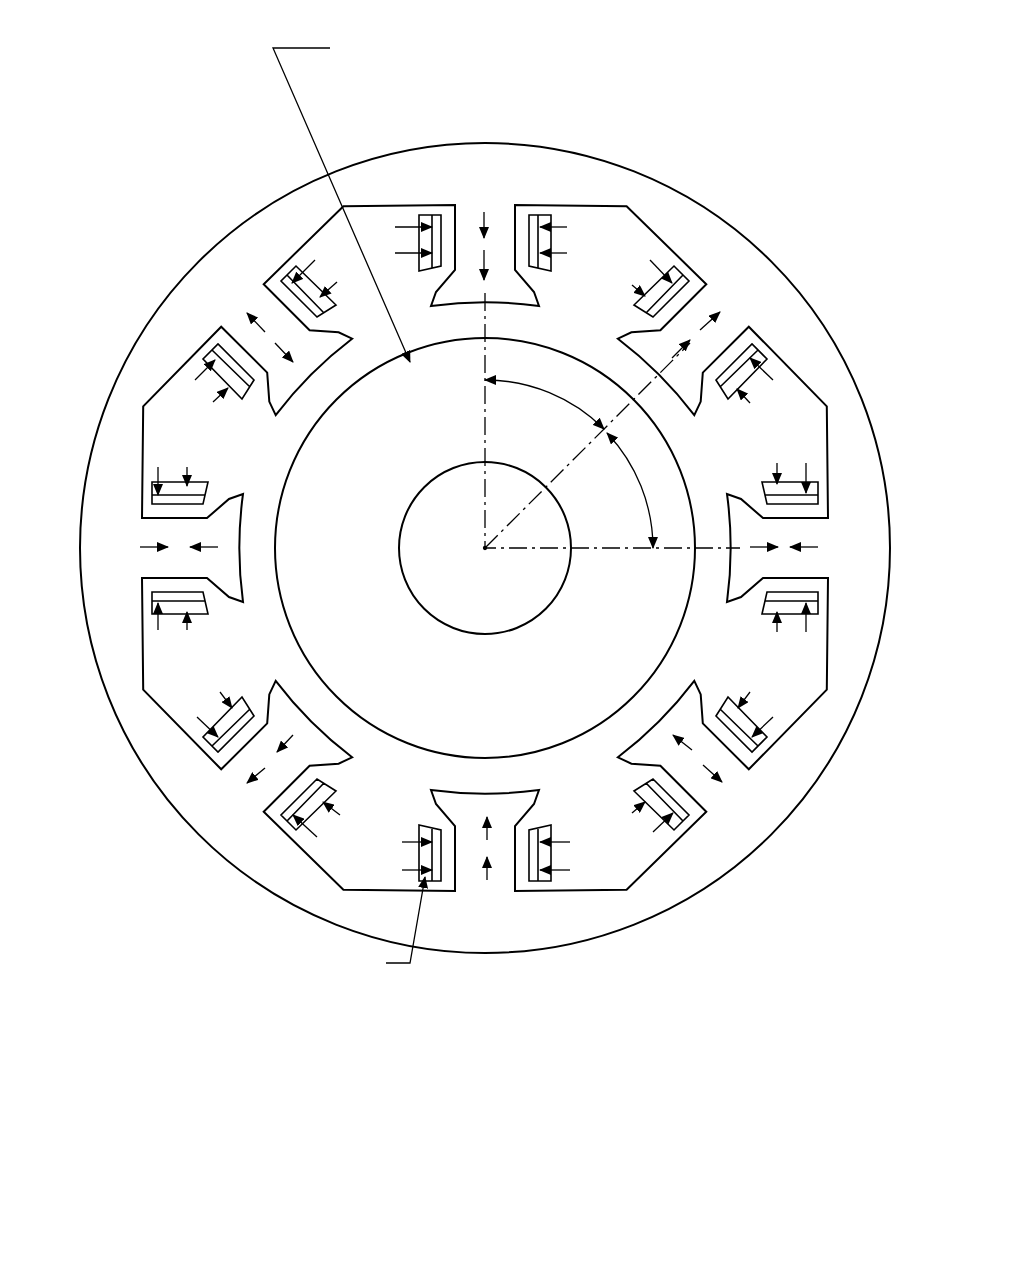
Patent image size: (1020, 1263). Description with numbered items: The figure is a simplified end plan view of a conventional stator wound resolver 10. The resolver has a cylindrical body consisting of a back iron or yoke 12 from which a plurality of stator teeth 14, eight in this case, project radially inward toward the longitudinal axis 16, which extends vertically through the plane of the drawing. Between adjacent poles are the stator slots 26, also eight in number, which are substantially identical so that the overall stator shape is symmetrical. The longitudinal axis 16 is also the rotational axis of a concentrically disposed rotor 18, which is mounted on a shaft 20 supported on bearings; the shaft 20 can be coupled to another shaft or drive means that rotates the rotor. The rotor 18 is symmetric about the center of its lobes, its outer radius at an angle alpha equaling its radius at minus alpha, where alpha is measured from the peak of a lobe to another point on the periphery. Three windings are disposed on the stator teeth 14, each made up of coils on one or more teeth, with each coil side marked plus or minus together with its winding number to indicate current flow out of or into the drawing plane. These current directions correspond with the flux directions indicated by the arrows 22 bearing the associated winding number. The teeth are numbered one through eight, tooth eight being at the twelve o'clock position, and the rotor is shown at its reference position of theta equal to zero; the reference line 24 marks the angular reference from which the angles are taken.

The stator wound resolver 10 is at (290, 1015).
The back iron or yoke 12 is at (150, 333).
The stator teeth 14 is at (276, 416).
The longitudinal axis 16 is at (485, 548).
The rotor 18 is at (531, 694).
The shaft 20 is at (430, 614).
The arrows 22 is at (482, 268).
The reference axis 24 is at (645, 392).
The stator slots 26 is at (618, 232).